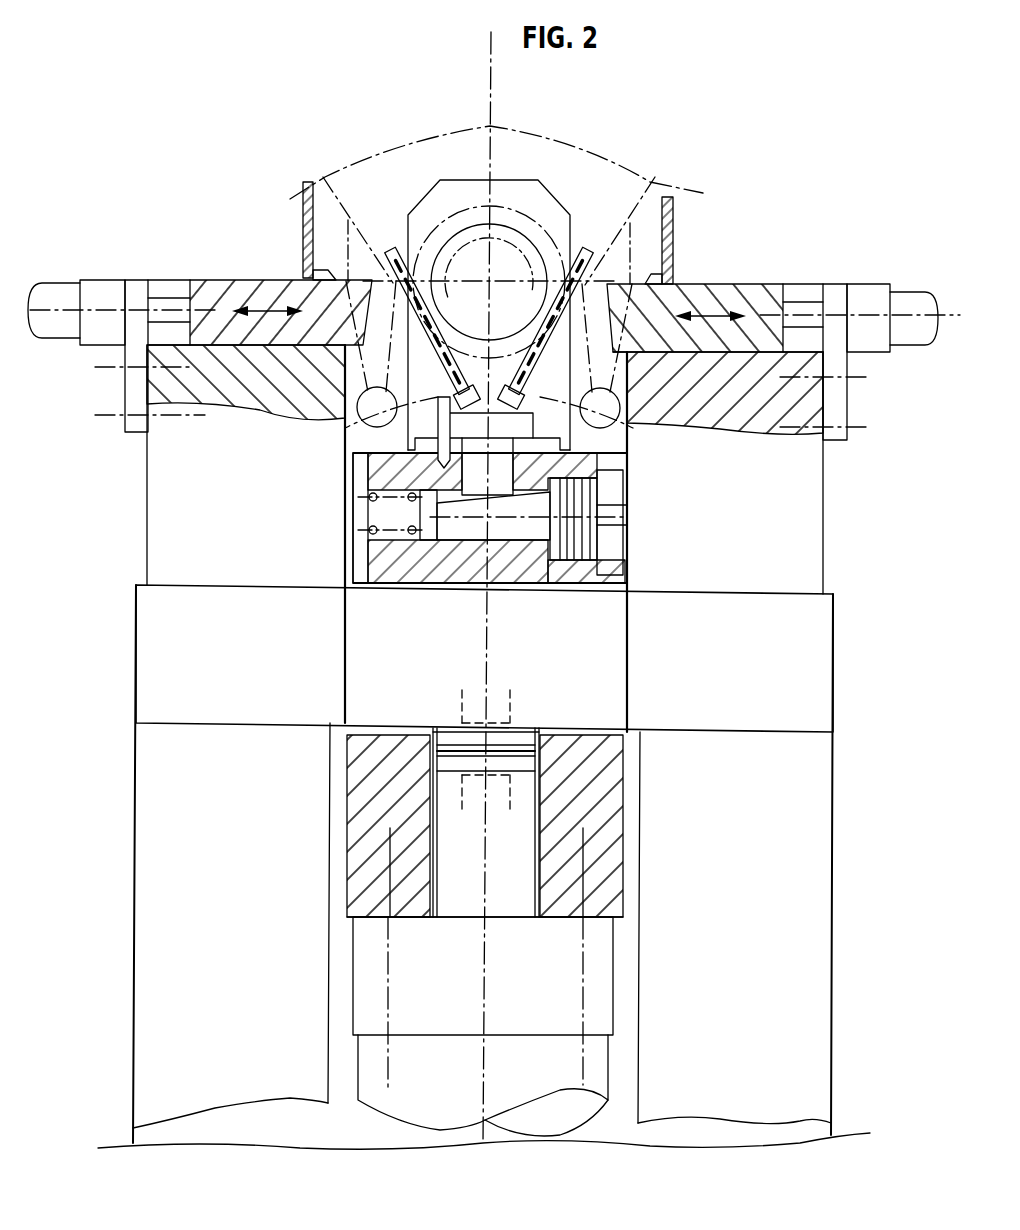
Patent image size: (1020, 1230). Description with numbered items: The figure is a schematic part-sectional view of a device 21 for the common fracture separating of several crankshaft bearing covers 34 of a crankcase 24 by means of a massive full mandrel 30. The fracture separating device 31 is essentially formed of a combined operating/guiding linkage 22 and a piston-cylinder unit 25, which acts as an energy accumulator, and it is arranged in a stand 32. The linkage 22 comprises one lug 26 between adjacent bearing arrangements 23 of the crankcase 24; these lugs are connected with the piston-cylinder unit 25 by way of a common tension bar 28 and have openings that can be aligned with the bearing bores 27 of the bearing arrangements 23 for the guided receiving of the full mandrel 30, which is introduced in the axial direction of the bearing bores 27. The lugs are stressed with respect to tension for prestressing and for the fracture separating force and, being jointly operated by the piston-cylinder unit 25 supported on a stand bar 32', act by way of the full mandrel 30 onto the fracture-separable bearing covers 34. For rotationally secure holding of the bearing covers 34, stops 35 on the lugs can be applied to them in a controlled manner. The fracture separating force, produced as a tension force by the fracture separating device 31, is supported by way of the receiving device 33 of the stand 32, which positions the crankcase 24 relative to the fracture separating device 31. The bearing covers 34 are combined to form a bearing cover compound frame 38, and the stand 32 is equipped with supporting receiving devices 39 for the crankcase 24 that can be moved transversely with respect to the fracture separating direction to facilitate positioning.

The device 21 is at (230, 222).
The combined operating/guiding linkage 22 is at (338, 833).
The bearing arrangements 23 is at (618, 211).
The crankcase 24 is at (665, 199).
The piston-cylinder unit 25 is at (447, 1078).
The lug 26 is at (437, 202).
The bearing bores 27 is at (511, 246).
The common tension bar 28 is at (613, 773).
The full mandrel 30 is at (477, 280).
The fracture separating device 31 is at (322, 512).
The stand 32 is at (489, 747).
The stand bar 32' is at (484, 658).
The receiving device 33 is at (245, 276).
The bearing covers 34 is at (616, 399).
The stops 35 is at (355, 441).
The bearing cover compound frame 38 is at (395, 387).
The supporting receiving devices 39 is at (219, 293).